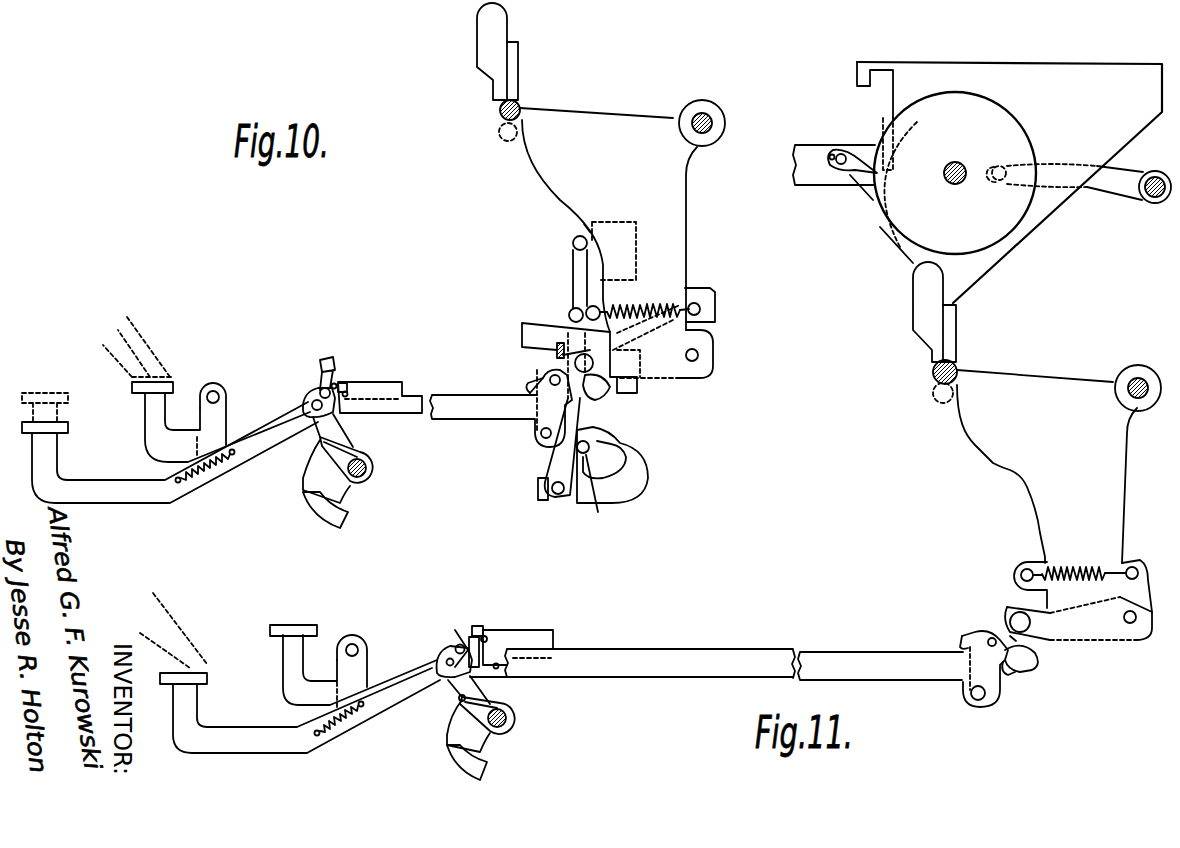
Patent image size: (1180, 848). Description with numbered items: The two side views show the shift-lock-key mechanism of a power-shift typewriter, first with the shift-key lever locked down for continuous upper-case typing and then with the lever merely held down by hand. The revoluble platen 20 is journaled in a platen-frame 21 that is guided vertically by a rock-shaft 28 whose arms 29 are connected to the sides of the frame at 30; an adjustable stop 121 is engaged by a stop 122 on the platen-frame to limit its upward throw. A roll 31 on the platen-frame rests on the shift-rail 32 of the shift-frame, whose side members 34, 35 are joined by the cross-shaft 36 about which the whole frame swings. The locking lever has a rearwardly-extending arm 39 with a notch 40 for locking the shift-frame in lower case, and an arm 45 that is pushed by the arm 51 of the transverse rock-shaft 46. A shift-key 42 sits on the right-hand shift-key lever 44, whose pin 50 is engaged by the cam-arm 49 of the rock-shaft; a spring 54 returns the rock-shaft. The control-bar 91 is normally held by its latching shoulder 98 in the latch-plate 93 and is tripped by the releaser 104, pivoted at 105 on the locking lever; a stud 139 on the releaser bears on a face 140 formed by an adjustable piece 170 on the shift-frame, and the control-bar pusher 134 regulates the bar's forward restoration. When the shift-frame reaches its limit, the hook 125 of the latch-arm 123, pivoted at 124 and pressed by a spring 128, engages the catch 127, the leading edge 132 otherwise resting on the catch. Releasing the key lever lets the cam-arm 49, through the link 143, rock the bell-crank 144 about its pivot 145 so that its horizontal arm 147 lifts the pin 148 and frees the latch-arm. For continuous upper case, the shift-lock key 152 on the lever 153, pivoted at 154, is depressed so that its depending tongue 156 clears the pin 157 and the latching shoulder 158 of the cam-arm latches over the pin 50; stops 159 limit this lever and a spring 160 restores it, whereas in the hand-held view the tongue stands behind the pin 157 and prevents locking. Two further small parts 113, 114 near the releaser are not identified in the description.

In FIG. 11, the platen 20 is at (1030, 141).
In FIG. 11, the platen-frame 21 is at (1035, 226).
In FIG. 11, the rock-shaft 28 is at (1144, 201).
In FIG. 11, the arms 29 is at (1100, 189).
In FIG. 11, the connection point 30 is at (997, 163).
In FIG. 10, the roll 31 is at (518, 60).
In FIG. 11, the roll 31 is at (957, 335).
In FIG. 10, the shift-rail 32 is at (500, 112).
In FIG. 11, the shift-rail 32 is at (934, 376).
In FIG. 10, the left side-member 34 is at (596, 494).
In FIG. 10, the right side-member 35 is at (524, 164).
In FIG. 11, the right side-member 35 is at (1005, 471).
In FIG. 10, the cross-shaft 36 is at (684, 108).
In FIG. 11, the cross-shaft 36 is at (1119, 371).
In FIG. 10, the rearwardly-extending arm 39 is at (647, 478).
In FIG. 10, the notch 40 is at (630, 449).
In FIG. 10, the shift-key 42 is at (68, 425).
In FIG. 11, the shift-key 42 is at (208, 679).
In FIG. 10, the right-hand shift-key lever 44 is at (100, 479).
In FIG. 11, the right-hand shift-key lever 44 is at (243, 727).
In FIG. 10, the arm of lock-lever 45 is at (348, 514).
In FIG. 11, the arm of lock-lever 45 is at (490, 771).
In FIG. 10, the rock-shaft 46 is at (370, 474).
In FIG. 11, the rock-shaft 46 is at (528, 715).
In FIG. 10, the cam-arm 49 is at (315, 437).
In FIG. 11, the cam-arm 49 is at (457, 691).
In FIG. 10, the pin 50 is at (349, 388).
In FIG. 11, the pin 50 is at (495, 638).
In FIG. 10, the arm 51 is at (303, 481).
In FIG. 11, the arm 51 is at (452, 733).
In FIG. 10, the spring 54 is at (362, 450).
In FIG. 11, the spring 54 is at (520, 721).
In FIG. 10, the control-bar 91 is at (701, 286).
In FIG. 10, the latch-plate 93 is at (555, 352).
In FIG. 10, the latching shoulder 98 is at (530, 338).
In FIG. 10, the releaser 104 is at (573, 268).
In FIG. 10, the pivot 105 is at (538, 490).
In FIG. 10, the roller 113 is at (571, 311).
In FIG. 10, the roller 114 is at (590, 307).
In FIG. 11, the adjustable stop 121 is at (855, 150).
In FIG. 11, the stop 122 is at (870, 186).
In FIG. 10, the latch-arm 123 is at (690, 379).
In FIG. 11, the latch-arm 123 is at (1056, 643).
In FIG. 11, the pivot 124 is at (1131, 625).
In FIG. 11, the hook 125 is at (1012, 638).
In FIG. 10, the catch 127 is at (582, 396).
In FIG. 11, the catch 127 is at (1010, 676).
In FIG. 10, the spring 128 is at (640, 303).
In FIG. 11, the spring 128 is at (1067, 572).
In FIG. 10, the leading edge 132 is at (537, 395).
In FIG. 11, the leading edge 132 is at (961, 640).
In FIG. 10, the control-bar pusher 134 is at (639, 388).
In FIG. 10, the stud 139 is at (574, 240).
In FIG. 10, the face 140 is at (586, 229).
In FIG. 10, the link 143 is at (455, 422).
In FIG. 11, the link 143 is at (744, 651).
In FIG. 10, the bell-crank 144 is at (531, 386).
In FIG. 11, the bell-crank 144 is at (995, 691).
In FIG. 11, the pivot 145 is at (986, 648).
In FIG. 10, the horizontal arm 147 is at (606, 389).
In FIG. 11, the horizontal arm 147 is at (1021, 661).
In FIG. 10, the pin or roll 148 is at (575, 364).
In FIG. 11, the pin or roll 148 is at (1014, 614).
In FIG. 10, the shift-lock key 152 is at (176, 384).
In FIG. 11, the shift-lock key 152 is at (318, 627).
In FIG. 10, the shift-lock lever 153 is at (143, 432).
In FIG. 11, the shift-lock lever 153 is at (282, 665).
In FIG. 10, the pivot 154 is at (222, 393).
In FIG. 11, the pivot 154 is at (356, 648).
In FIG. 10, the depending tongue 156 is at (322, 374).
In FIG. 11, the depending tongue 156 is at (465, 630).
In FIG. 10, the pin 157 is at (321, 392).
In FIG. 11, the pin 157 is at (466, 647).
In FIG. 10, the latching shoulder 158 is at (347, 384).
In FIG. 11, the latching shoulder 158 is at (475, 626).
In FIG. 10, the stops 159 is at (334, 383).
In FIG. 11, the stops 159 is at (485, 635).
In FIG. 10, the spring 160 is at (217, 471).
In FIG. 11, the spring 160 is at (340, 721).
In FIG. 10, the adjustable piece 170 is at (624, 221).